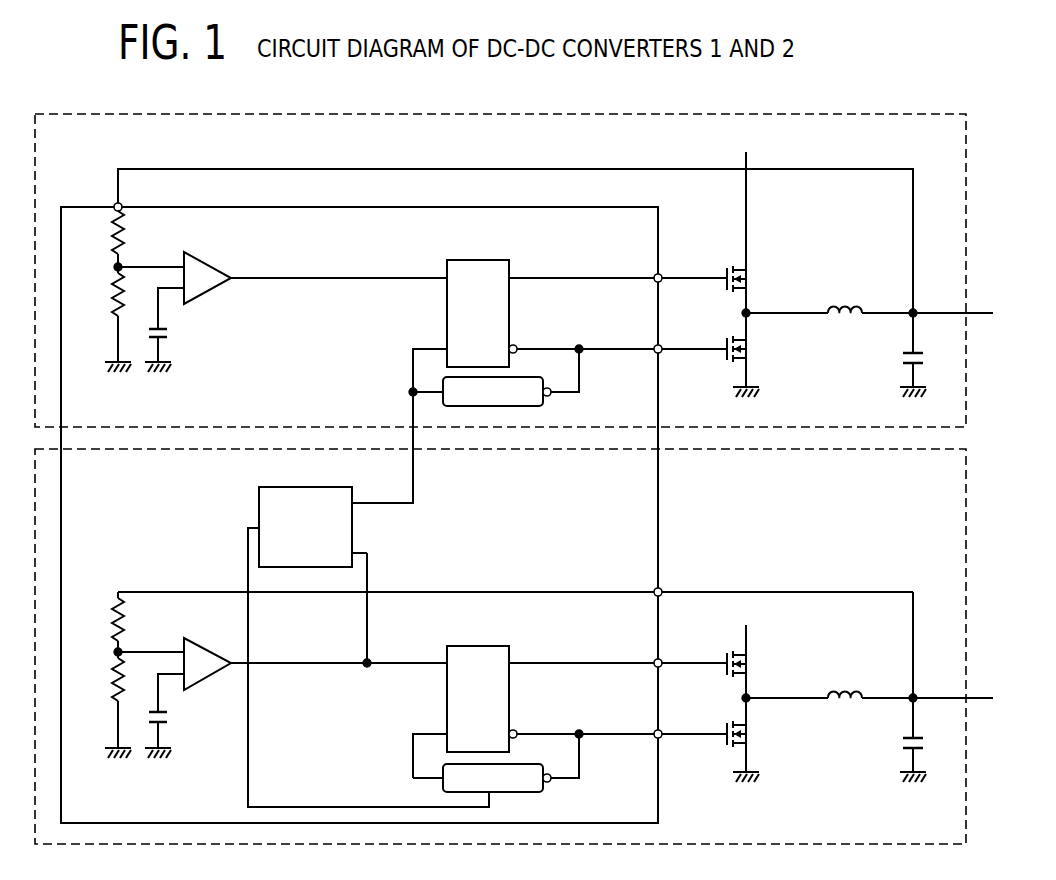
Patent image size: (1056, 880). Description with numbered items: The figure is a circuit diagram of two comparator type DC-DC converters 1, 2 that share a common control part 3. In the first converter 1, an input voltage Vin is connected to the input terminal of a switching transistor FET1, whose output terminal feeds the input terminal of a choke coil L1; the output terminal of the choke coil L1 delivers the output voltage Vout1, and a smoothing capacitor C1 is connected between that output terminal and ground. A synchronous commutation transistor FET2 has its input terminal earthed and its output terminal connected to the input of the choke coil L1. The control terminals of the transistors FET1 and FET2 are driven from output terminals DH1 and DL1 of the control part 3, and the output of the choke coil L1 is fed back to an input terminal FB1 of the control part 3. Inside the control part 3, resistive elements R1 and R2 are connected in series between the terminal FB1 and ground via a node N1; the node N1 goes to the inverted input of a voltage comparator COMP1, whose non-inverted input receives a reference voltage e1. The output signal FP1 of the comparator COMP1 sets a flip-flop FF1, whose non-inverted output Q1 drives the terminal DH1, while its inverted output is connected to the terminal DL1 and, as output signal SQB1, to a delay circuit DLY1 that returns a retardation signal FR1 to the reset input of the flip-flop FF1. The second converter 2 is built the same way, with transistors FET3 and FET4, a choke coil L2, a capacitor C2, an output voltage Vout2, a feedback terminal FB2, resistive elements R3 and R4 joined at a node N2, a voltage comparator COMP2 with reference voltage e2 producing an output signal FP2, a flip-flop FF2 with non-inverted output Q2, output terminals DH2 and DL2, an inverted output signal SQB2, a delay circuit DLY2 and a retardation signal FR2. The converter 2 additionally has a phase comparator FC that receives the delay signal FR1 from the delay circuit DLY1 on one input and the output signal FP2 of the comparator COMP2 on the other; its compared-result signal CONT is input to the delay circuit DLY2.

The DC-DC converter 1 is at (966, 209).
The DC-DC converter 2 is at (966, 593).
The control part 3 is at (278, 207).
The input voltage Vin is at (515, 390).
The input terminal FB1 is at (140, 195).
The resistive element R1 is at (102, 242).
The resistive element R2 is at (105, 322).
The node N1 is at (134, 267).
The voltage comparator COMP1 is at (196, 263).
The reference voltage e1 is at (172, 330).
The output signal FP1 is at (339, 265).
The flip-flop FF1 is at (490, 260).
The non-inverted output terminal Q1 is at (582, 265).
The output terminal DH1 is at (690, 267).
The output terminal DL1 is at (690, 338).
The output signal SQB1 is at (582, 360).
The delay circuit DLY1 is at (530, 406).
The retardation signal FR1 is at (399, 426).
The transistor FET1 is at (768, 303).
The transistor FET2 is at (768, 366).
The choke coil L1 is at (827, 297).
The smoothing capacitor C1 is at (927, 355).
The output voltage Vout1 is at (982, 312).
The phase comparator FC is at (259, 498).
The compared-result signal CONT is at (368, 667).
The feedback node 2 FB2 is at (515, 632).
The resistor R3 is at (102, 628).
The resistor R4 is at (105, 708).
The node N2 is at (134, 652).
The voltage comparator COMP2 is at (196, 649).
The reference voltage source e2 is at (172, 716).
The output signal FP2 is at (339, 610).
The flip-flop FF2 is at (490, 646).
The flip-flop output Q2 is at (582, 650).
The high-side drive output DH2 is at (690, 652).
The low-side drive output DL2 is at (690, 723).
The inverted output signal SQB2 is at (582, 745).
The delay circuit DLY2 is at (530, 792).
The reset signal FR2 is at (411, 756).
The high-side transistor FET3 is at (768, 688).
The low-side transistor FET4 is at (768, 751).
The inductor L2 is at (827, 682).
The capacitor C2 is at (927, 740).
The output voltage Vout2 is at (982, 697).